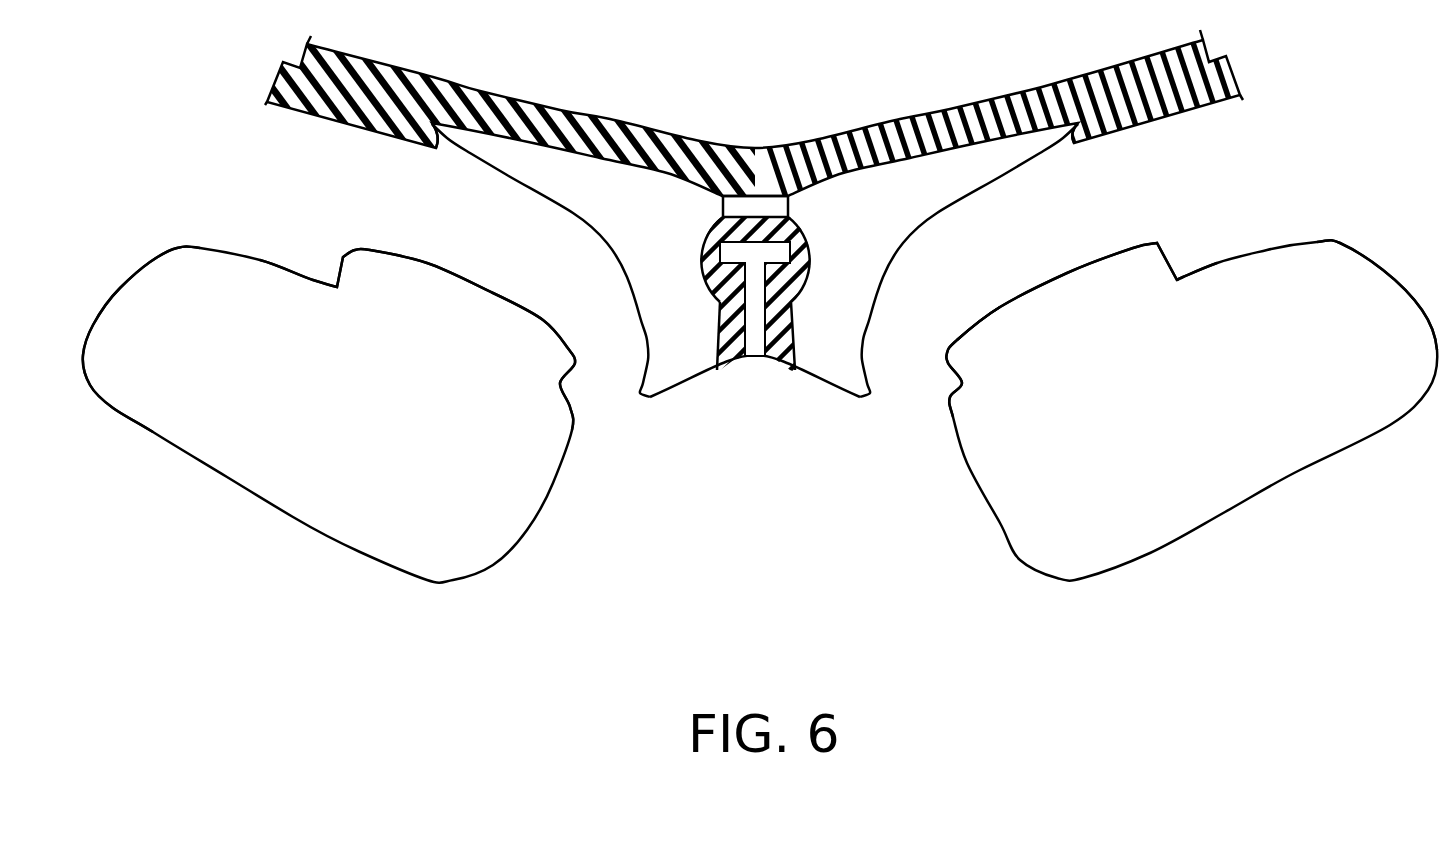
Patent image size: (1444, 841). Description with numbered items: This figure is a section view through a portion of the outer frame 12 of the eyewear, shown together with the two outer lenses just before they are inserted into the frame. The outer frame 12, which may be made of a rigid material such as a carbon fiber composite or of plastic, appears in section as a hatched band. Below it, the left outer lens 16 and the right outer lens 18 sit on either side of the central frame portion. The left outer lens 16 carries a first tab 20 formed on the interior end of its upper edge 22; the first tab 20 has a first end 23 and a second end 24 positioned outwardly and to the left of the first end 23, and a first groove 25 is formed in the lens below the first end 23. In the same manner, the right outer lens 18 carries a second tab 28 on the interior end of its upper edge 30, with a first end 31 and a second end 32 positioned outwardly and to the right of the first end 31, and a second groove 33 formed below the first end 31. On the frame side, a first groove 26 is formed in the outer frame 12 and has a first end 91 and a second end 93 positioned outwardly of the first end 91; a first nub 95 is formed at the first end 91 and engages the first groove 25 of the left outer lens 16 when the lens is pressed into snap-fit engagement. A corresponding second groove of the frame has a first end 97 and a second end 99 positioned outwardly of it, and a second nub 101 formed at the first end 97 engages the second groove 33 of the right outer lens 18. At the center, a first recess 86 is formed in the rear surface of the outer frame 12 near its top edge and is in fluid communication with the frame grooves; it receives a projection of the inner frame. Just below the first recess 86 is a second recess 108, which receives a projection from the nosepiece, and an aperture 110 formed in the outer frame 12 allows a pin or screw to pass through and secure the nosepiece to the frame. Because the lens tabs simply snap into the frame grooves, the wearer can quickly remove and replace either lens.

The outer frame 12 is at (1054, 92).
The first groove 26 is at (903, 199).
The first recess 86 is at (755, 194).
The first end 97 is at (722, 203).
The first end 91 is at (789, 203).
The first nub 95 is at (811, 245).
The second nub 101 is at (702, 280).
The second recess 108 is at (727, 254).
The aperture 110 is at (755, 352).
The second end 99 is at (436, 128).
The second end 93 is at (1073, 128).
The right outer lens 18 is at (352, 458).
The left outer lens 16 is at (1174, 452).
The upper edge 30 is at (223, 250).
The second end 32 is at (342, 252).
The second tab 28 is at (447, 292).
The first end 31 is at (566, 344).
The second groove 33 is at (568, 387).
The upper edge 22 is at (1285, 242).
The second end 24 is at (1166, 256).
The first tab 20 is at (1068, 286).
The first end 23 is at (955, 340).
The first groove 25 is at (960, 383).